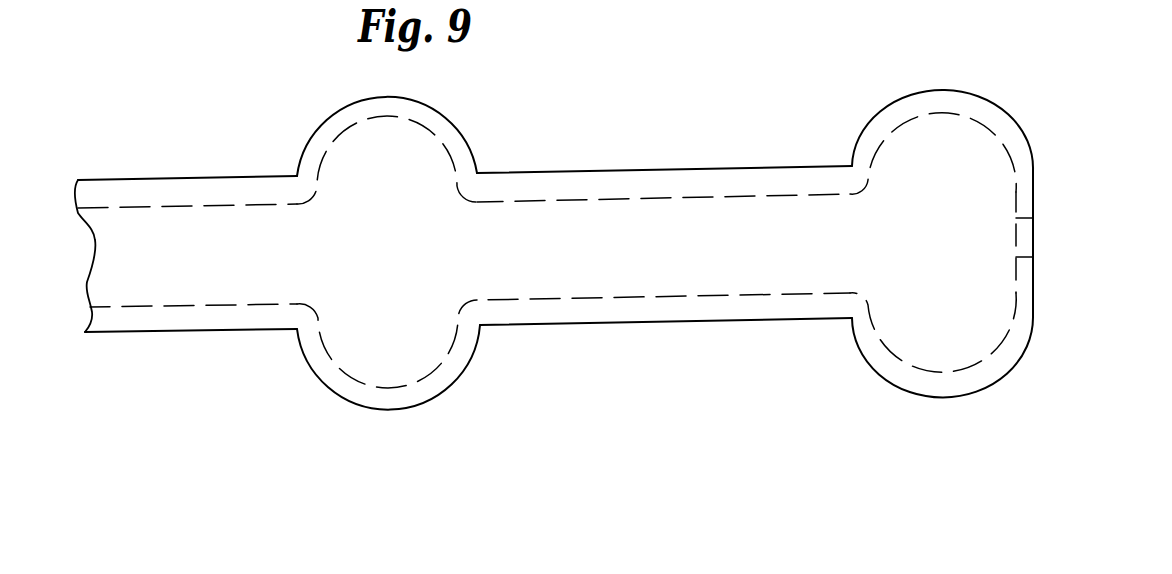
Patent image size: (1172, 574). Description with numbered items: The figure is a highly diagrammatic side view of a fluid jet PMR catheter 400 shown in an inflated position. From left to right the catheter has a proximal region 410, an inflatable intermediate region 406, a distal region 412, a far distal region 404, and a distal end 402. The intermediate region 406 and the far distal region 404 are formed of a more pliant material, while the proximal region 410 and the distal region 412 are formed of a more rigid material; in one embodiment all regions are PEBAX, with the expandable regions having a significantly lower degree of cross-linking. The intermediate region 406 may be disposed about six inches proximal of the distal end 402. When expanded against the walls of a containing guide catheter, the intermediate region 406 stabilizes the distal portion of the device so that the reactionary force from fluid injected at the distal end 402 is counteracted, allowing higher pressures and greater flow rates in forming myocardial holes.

The PMR catheter 400 is at (609, 110).
The distal end 402 is at (1033, 200).
The far distal region 404 is at (902, 98).
The intermediate region 406 is at (353, 102).
The proximal region 410 is at (189, 177).
The distal region 412 is at (696, 171).